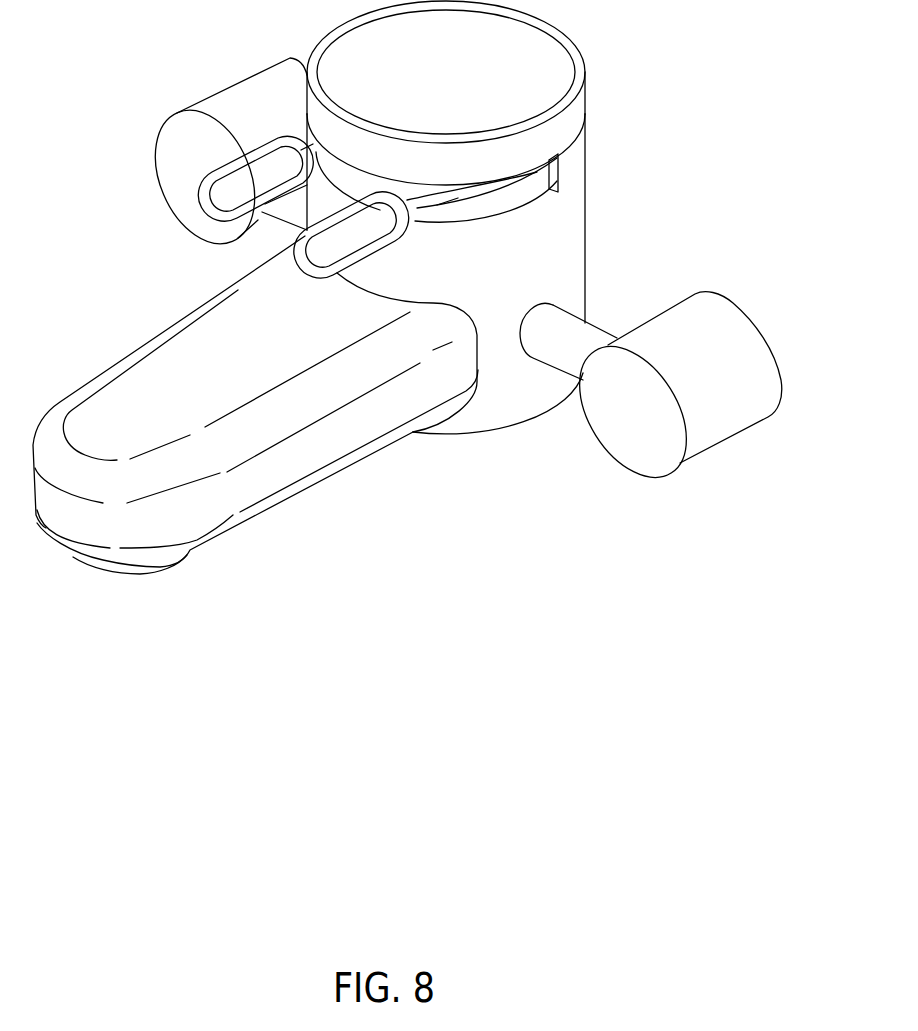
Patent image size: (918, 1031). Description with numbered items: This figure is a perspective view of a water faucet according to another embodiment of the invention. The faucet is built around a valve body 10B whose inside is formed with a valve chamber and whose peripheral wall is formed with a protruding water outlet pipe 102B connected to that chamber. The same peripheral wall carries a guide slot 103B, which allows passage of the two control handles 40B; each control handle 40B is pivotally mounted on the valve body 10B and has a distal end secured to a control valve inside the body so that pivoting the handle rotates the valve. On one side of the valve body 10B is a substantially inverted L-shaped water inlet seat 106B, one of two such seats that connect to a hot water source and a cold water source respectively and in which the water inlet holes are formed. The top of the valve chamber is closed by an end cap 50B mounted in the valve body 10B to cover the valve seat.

The valve body 10B is at (531, 440).
The control handle 40B is at (199, 211).
The end cap 50B is at (559, 82).
The water outlet pipe 102B is at (140, 348).
The guide slot 103B is at (547, 190).
The water inlet seat 106B is at (715, 426).